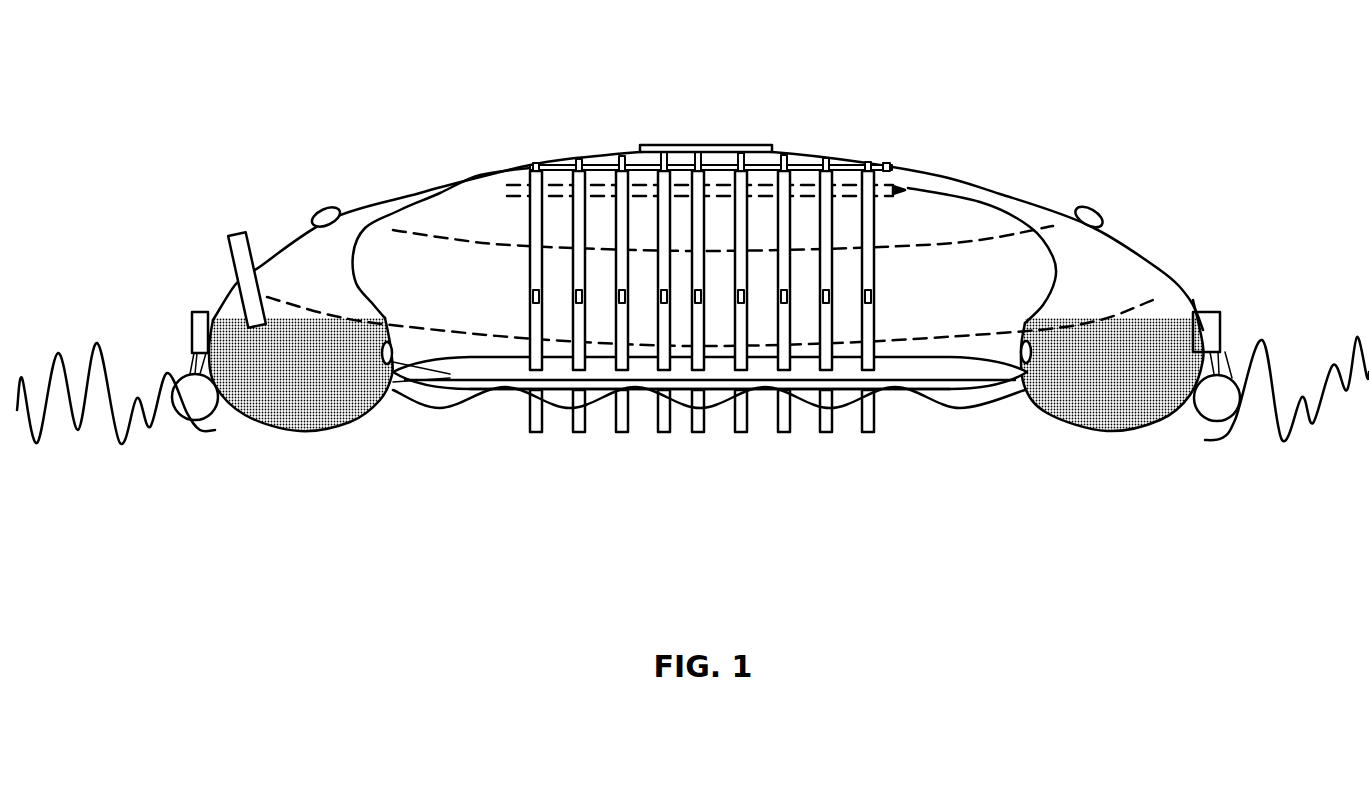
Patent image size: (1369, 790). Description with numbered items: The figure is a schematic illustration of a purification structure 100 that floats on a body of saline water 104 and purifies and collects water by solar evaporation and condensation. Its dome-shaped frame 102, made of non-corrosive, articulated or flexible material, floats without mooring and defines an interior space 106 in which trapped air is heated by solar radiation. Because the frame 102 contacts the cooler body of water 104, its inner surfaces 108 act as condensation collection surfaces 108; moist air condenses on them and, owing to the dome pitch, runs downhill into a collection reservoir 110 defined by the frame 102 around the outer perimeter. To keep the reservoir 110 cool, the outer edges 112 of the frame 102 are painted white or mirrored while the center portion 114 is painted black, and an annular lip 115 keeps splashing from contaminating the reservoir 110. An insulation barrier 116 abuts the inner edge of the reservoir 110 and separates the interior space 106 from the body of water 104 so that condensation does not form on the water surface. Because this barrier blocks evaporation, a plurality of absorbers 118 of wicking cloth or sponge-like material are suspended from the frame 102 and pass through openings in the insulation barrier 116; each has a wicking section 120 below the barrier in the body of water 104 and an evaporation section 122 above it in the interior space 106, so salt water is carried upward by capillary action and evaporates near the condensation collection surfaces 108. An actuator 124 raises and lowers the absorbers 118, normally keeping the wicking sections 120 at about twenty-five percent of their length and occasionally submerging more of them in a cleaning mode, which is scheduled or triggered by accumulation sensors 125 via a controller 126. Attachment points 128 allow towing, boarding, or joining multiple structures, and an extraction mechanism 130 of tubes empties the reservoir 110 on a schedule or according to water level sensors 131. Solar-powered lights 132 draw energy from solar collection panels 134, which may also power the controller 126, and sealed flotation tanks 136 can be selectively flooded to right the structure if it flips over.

The purification structure 100 is at (440, 152).
The frame 102 is at (975, 180).
The body of water 104 is at (591, 512).
The interior space 106 is at (918, 229).
The condensation collection surfaces 108 is at (522, 170).
The collection reservoir 110 is at (1117, 430).
The outer edges 112 is at (1158, 263).
The center portion 114 is at (742, 110).
The annular lip 115 is at (440, 197).
The insulation barrier 116 is at (505, 368).
The absorbers 118 is at (876, 445).
The wicking section 120 is at (896, 414).
The evaporation section 122 is at (895, 288).
The actuator 124 is at (603, 167).
The accumulation sensors 125 is at (533, 291).
The controller 126 is at (890, 162).
The attachment points 128 is at (1220, 312).
The extraction mechanism 130 is at (233, 232).
The water level sensors 131 is at (1022, 380).
The lights 132 is at (1100, 210).
The solar collection panels 134 is at (705, 145).
The flotation tanks 136 is at (1217, 421).